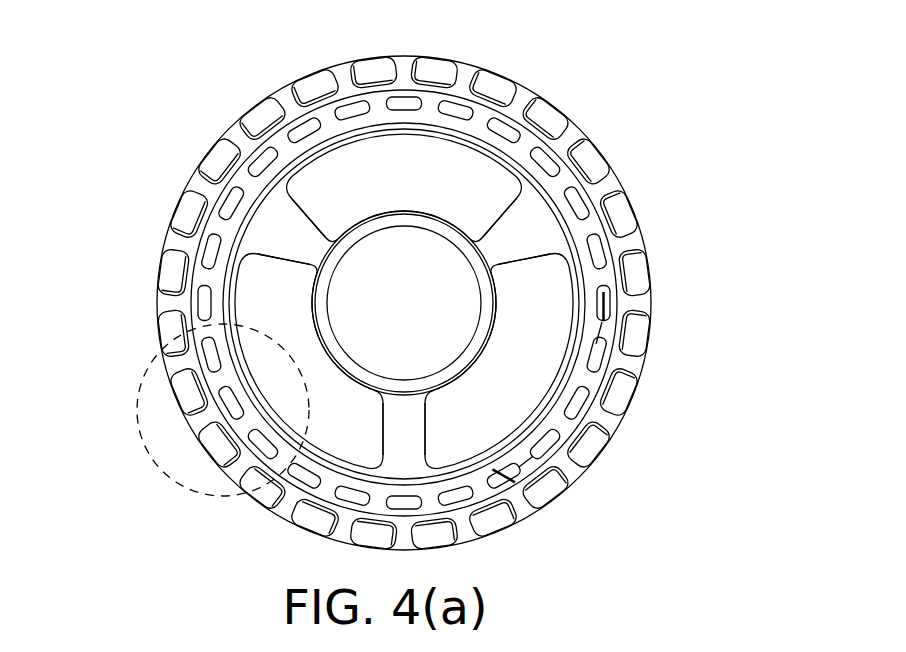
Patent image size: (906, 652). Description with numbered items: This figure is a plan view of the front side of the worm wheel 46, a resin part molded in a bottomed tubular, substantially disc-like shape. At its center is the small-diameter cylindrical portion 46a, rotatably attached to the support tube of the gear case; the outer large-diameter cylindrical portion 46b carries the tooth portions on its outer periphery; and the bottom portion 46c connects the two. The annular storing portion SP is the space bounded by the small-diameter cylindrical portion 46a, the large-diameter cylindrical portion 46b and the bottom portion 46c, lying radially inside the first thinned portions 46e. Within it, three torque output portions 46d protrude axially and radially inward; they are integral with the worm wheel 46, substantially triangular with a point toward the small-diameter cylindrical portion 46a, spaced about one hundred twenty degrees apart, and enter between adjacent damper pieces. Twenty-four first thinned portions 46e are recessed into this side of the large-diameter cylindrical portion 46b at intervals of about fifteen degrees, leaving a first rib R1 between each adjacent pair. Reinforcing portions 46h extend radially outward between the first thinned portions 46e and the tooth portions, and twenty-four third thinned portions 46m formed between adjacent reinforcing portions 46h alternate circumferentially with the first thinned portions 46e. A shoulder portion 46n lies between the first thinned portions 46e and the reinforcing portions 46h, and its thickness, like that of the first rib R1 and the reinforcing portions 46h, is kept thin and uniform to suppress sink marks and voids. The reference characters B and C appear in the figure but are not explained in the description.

The worm wheel 46 is at (638, 140).
The small-diameter cylindrical portion 46a is at (400, 225).
The large-diameter cylindrical portion 46b is at (297, 117).
The bottom portion 46c is at (495, 383).
The torque output portion 46d is at (250, 247).
The first thinned portion 46e is at (267, 163).
The reinforcing portion 46h is at (527, 103).
The third thinned portion 46m is at (437, 72).
The shoulder portion 46n is at (615, 365).
The first rib R1 is at (380, 108).
The bolt B is at (597, 306).
The storing portion SP is at (343, 418).
The circle C is at (147, 457).